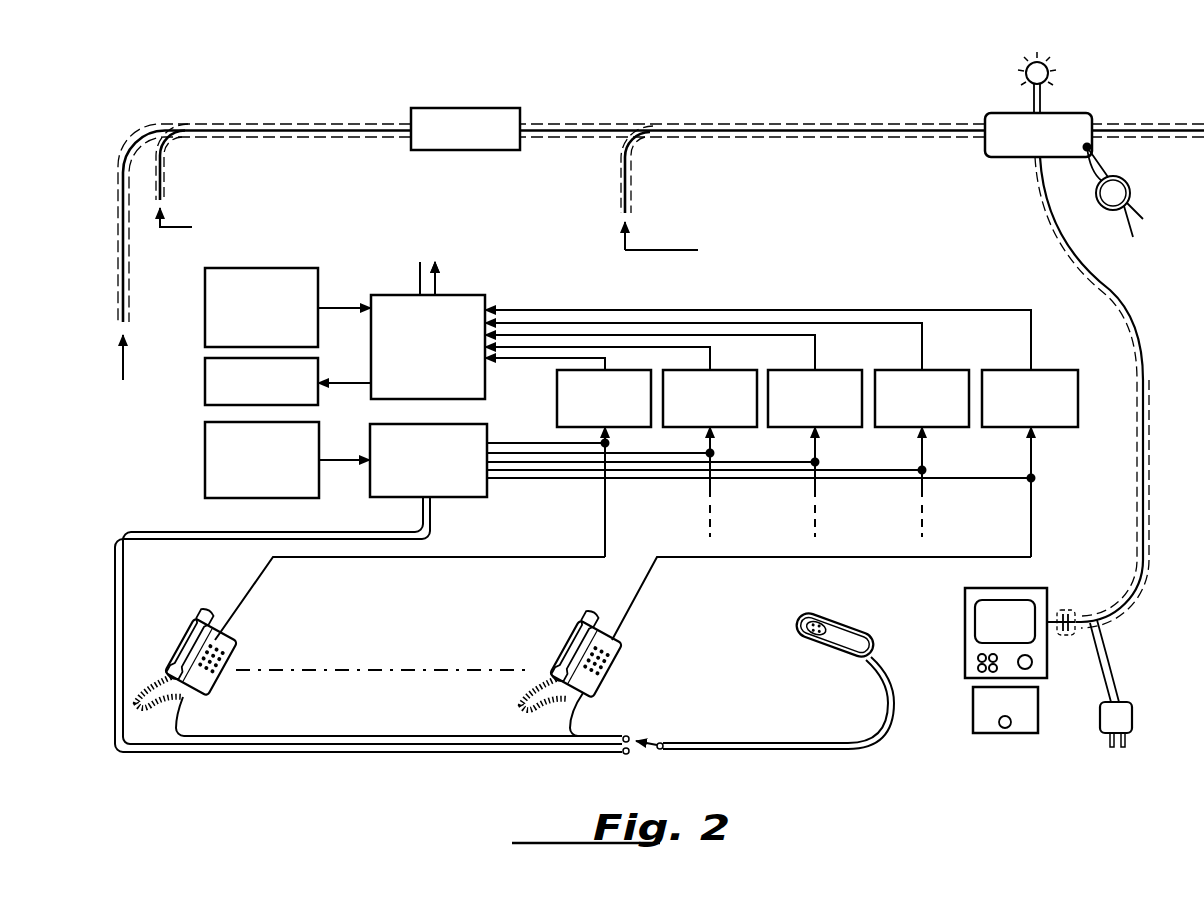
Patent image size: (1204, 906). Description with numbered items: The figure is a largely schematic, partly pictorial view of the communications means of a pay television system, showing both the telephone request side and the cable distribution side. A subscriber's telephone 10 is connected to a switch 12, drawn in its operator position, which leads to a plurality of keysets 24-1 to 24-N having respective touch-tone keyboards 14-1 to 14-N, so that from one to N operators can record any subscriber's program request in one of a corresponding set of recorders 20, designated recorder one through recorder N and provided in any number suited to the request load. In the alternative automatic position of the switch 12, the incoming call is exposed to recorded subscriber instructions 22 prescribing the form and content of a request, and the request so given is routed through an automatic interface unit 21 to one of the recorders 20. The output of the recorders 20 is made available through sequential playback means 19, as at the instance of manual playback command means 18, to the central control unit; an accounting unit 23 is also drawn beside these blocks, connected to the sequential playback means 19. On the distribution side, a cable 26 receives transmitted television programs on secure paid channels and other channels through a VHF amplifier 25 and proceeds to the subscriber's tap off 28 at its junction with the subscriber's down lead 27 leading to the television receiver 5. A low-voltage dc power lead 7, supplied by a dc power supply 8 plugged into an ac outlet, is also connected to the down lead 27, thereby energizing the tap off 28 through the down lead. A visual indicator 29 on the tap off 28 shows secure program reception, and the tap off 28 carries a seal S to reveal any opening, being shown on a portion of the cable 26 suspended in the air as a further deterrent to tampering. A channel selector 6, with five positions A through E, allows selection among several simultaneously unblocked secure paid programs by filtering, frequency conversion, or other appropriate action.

The television receiver 5 is at (973, 642).
The channel selector 6 is at (977, 722).
The low-voltage dc power lead 7 is at (1113, 678).
The dc power supply 8 is at (1117, 722).
The subscriber's telephone 10 is at (828, 650).
The switch 12 is at (653, 737).
The touch-tone keyboard 14-1 is at (237, 645).
The touch-tone keyboard 14-N is at (618, 647).
The manual playback command means 18 is at (205, 290).
The sequential playback means 19 is at (475, 305).
The recorders 20 is at (553, 385).
The automatic interface unit 21 is at (477, 486).
The recorded subscriber instructions 22 is at (207, 467).
The accounting unit 23 is at (205, 369).
The keyset 24-1 is at (223, 640).
The keyset 24-N is at (617, 640).
The VHF amplifier 25 is at (473, 110).
The cable 26 is at (735, 133).
The down lead 27 is at (1156, 297).
The tap off 28 is at (1082, 118).
The visual indicator 29 is at (1023, 66).